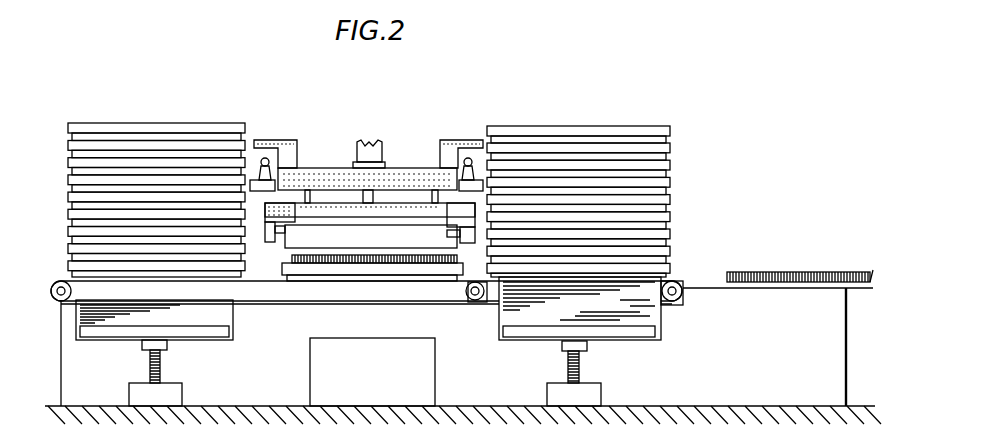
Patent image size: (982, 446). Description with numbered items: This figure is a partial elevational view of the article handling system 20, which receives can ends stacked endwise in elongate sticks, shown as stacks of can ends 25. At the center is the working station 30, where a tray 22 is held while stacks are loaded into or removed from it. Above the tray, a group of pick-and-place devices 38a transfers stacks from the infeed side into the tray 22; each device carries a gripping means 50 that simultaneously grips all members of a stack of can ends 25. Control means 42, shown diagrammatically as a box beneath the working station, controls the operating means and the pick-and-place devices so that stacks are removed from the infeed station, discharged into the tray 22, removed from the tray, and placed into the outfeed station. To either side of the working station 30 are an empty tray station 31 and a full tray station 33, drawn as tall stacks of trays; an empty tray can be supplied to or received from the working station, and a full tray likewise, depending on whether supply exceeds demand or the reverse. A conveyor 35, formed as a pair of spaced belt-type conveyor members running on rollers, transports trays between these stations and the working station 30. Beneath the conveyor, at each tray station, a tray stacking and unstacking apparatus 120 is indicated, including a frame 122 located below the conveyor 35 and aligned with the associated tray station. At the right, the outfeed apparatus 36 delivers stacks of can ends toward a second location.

The article handling system 20 is at (740, 98).
The tray 22 is at (377, 274).
The stack of can ends 25 is at (292, 256).
The working station 30 is at (323, 306).
The empty tray station 31 is at (598, 113).
The full tray station 33 is at (153, 91).
The conveyor 35 is at (452, 303).
The outfeed apparatus 36 is at (783, 210).
The group of pick-and-place devices 38a is at (320, 168).
The control means 42 is at (372, 374).
The gripping means 50 is at (400, 235).
The tray stacking and unstacking apparatus 120 is at (165, 355).
The frame 122 is at (122, 343).